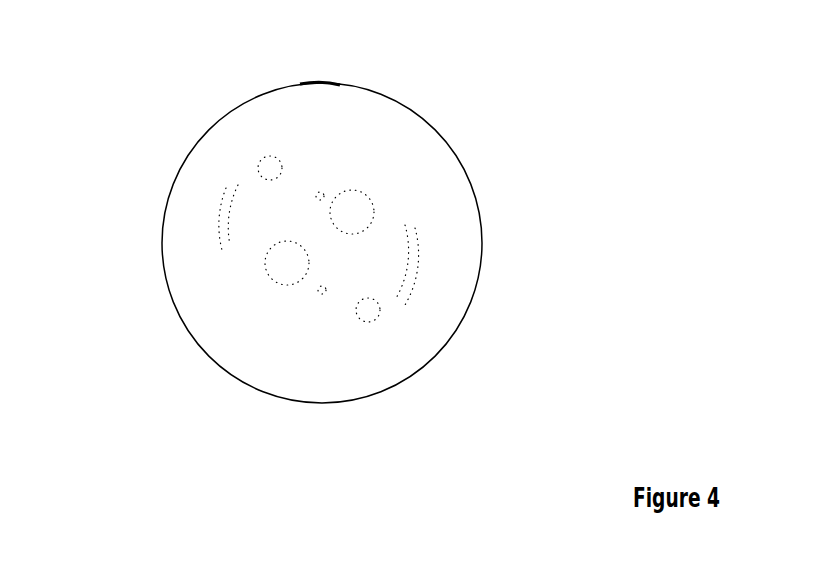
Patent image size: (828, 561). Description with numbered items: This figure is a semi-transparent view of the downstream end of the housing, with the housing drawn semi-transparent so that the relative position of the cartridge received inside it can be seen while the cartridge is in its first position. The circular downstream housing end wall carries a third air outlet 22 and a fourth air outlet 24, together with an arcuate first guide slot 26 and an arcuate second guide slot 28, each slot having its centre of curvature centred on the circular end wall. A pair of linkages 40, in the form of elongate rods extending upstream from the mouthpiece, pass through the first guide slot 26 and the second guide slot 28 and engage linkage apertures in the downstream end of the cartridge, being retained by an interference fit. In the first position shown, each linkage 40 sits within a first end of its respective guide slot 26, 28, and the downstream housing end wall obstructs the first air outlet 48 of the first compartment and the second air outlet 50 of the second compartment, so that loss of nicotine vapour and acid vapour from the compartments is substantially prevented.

The third air outlet 22 is at (321, 193).
The fourth air outlet 24 is at (322, 290).
The first guide slot 26 is at (235, 212).
The second guide slot 28 is at (413, 258).
The linkages 40 is at (267, 167).
The first air outlet 48 is at (357, 212).
The second air outlet 50 is at (287, 263).